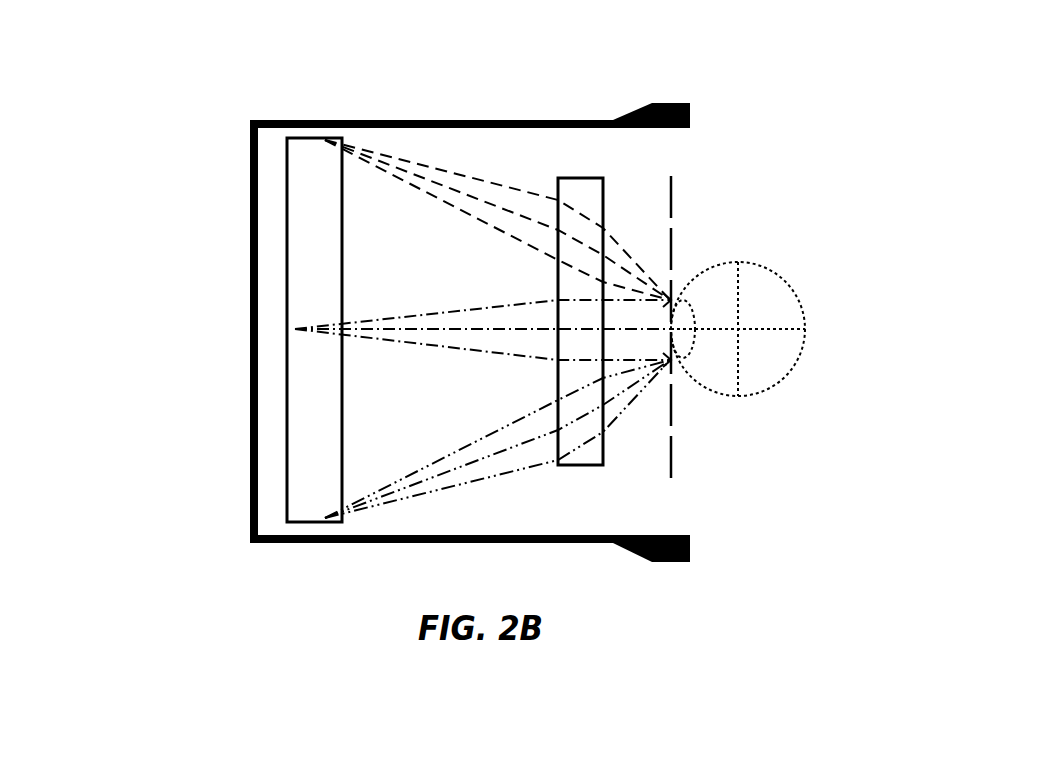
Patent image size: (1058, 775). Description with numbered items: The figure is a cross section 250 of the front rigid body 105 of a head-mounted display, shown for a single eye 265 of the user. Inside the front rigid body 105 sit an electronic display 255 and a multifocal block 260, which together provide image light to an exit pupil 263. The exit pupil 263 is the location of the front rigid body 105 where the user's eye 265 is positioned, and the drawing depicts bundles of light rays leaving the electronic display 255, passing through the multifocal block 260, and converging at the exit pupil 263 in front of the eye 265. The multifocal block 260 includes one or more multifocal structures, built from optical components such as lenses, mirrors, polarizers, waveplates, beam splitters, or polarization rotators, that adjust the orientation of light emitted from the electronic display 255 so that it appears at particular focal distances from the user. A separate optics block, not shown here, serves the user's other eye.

The front rigid body 105 is at (365, 90).
The cross section 250 is at (958, 24).
The electronic display 255 is at (288, 173).
The multifocal block 260 is at (603, 195).
The exit pupil 263 is at (672, 463).
The eye 265 is at (775, 273).